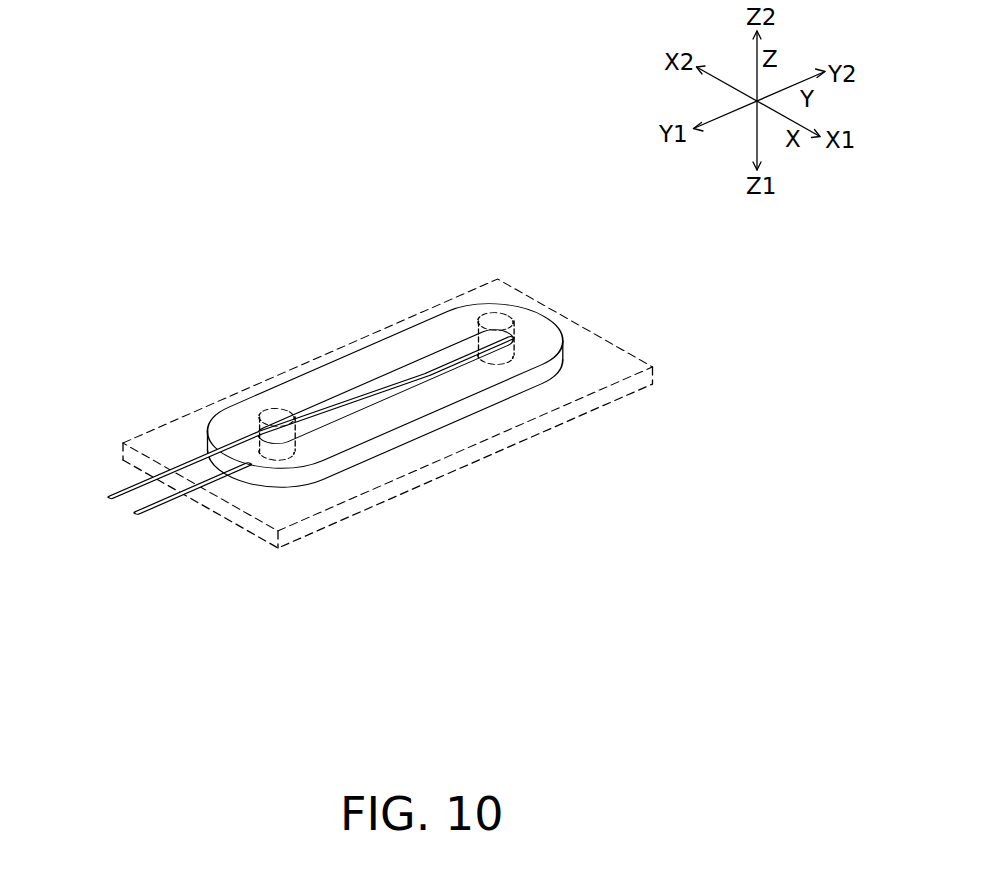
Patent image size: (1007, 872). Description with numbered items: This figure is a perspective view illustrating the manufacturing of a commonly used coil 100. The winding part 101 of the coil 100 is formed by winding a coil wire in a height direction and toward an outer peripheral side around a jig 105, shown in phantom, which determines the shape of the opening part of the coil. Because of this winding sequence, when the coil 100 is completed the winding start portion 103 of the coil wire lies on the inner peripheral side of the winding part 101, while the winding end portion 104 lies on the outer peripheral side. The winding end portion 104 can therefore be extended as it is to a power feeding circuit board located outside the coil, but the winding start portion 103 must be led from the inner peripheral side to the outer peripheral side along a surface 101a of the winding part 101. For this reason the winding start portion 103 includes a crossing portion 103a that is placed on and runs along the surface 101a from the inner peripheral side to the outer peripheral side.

The coil 100 is at (316, 413).
The winding part 101 is at (423, 341).
The surface of the winding part 101a is at (327, 388).
The winding start portion 103 is at (134, 484).
The crossing portion 103a is at (236, 433).
The winding end portion 104 is at (171, 506).
The jig 105 is at (605, 331).